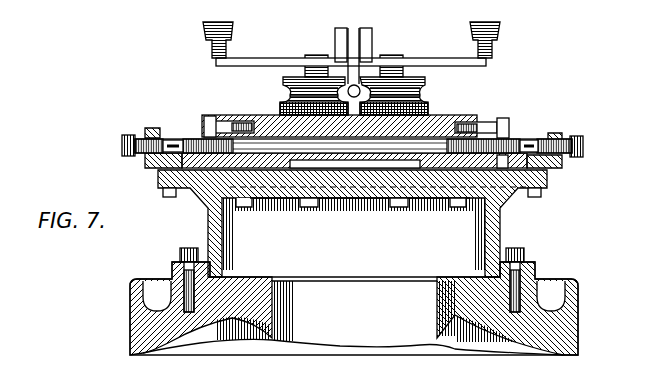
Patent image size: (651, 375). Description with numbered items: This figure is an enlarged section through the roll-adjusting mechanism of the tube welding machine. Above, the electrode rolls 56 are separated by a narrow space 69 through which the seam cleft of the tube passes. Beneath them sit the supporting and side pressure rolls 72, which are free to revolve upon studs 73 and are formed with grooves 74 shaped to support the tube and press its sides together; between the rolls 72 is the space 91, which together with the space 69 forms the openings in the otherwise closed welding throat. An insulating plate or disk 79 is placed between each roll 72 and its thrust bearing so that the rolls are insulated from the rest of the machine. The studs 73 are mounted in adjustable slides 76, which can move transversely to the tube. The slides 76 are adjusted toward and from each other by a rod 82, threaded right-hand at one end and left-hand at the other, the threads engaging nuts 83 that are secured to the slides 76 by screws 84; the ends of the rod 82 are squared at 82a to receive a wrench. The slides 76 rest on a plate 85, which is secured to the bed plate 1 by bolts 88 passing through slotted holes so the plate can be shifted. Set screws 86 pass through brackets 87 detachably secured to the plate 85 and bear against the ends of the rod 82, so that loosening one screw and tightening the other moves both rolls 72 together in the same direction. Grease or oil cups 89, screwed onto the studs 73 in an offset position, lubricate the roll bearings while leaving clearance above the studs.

The bed plate 1 is at (580, 333).
The electrode rolls 56 is at (340, 34).
The narrow space 69 is at (354, 32).
The supporting and side pressure rolls 72 is at (290, 84).
The studs 73 is at (316, 56).
The grooves 74 is at (292, 91).
The adjustable slides 76 is at (294, 172).
The insulating plate or disk 79 is at (282, 110).
The rod 82 is at (352, 142).
The squared ends 82a is at (570, 113).
The nuts 83 is at (218, 118).
The screws 84 is at (206, 126).
The plate 85 is at (500, 212).
The set screws 86 is at (122, 147).
The brackets 87 is at (146, 162).
The bolts 88 is at (185, 250).
The grease or oil cups 89 is at (502, 30).
The space 91 is at (346, 132).